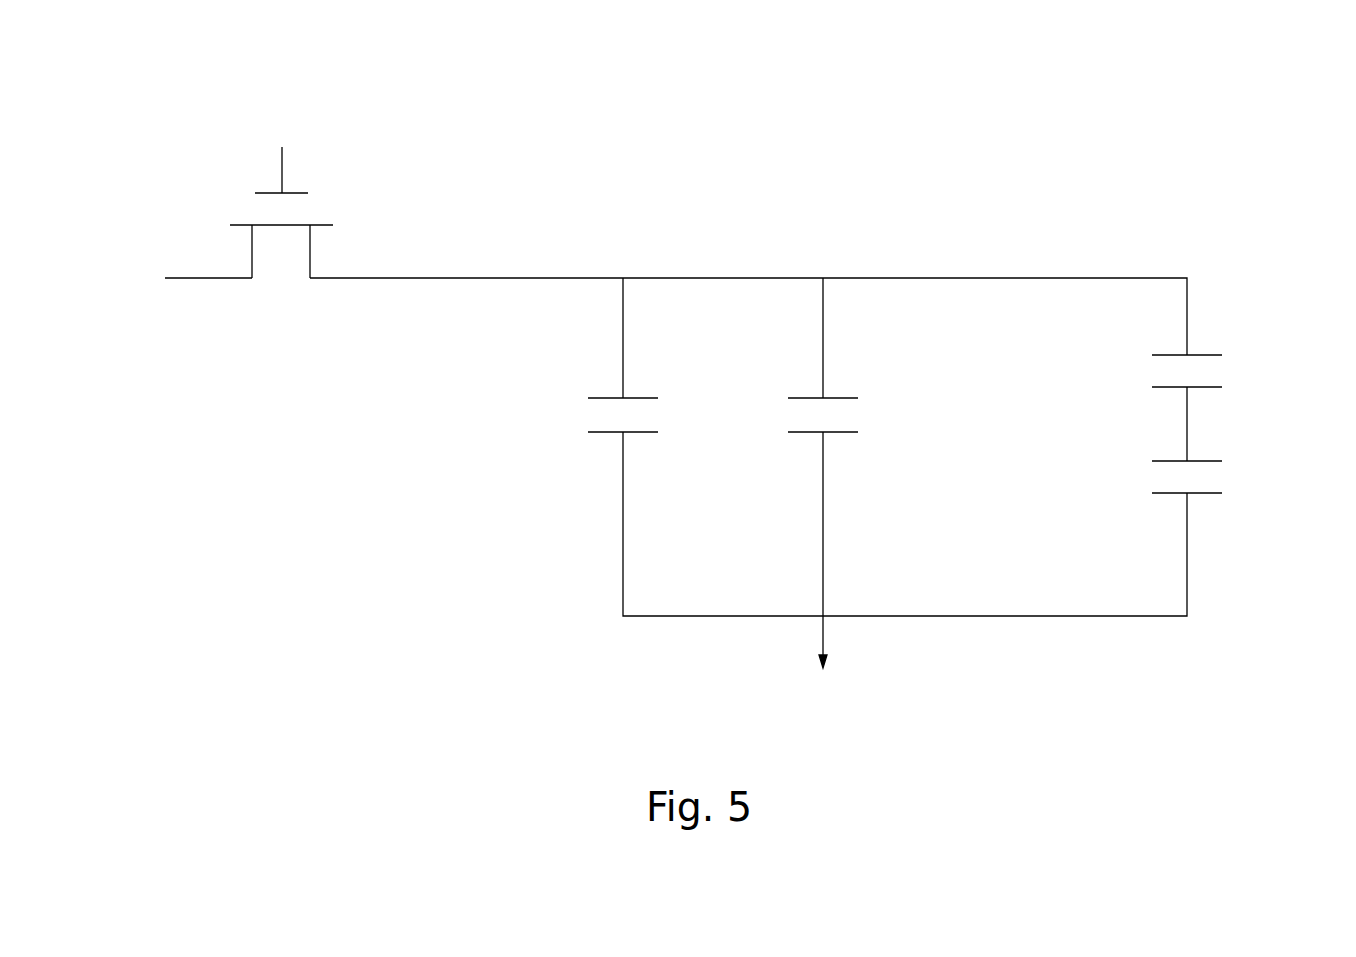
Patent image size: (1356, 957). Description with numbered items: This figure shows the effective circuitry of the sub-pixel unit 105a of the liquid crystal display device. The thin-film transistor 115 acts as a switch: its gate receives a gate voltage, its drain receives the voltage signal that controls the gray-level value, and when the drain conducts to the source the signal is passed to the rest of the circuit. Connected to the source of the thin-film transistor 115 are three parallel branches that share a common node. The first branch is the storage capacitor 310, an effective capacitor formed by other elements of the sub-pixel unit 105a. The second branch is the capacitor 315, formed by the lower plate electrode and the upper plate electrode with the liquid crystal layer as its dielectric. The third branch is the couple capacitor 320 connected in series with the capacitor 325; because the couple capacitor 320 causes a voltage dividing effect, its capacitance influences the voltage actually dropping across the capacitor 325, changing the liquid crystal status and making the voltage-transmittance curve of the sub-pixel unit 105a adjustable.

The sub-pixel unit 105a is at (177, 114).
The thin-film transistor 115 is at (339, 192).
The storage capacitor 310 is at (568, 420).
The capacitor 315 is at (877, 418).
The couple capacitor 320 is at (1250, 374).
The capacitor 325 is at (1240, 487).